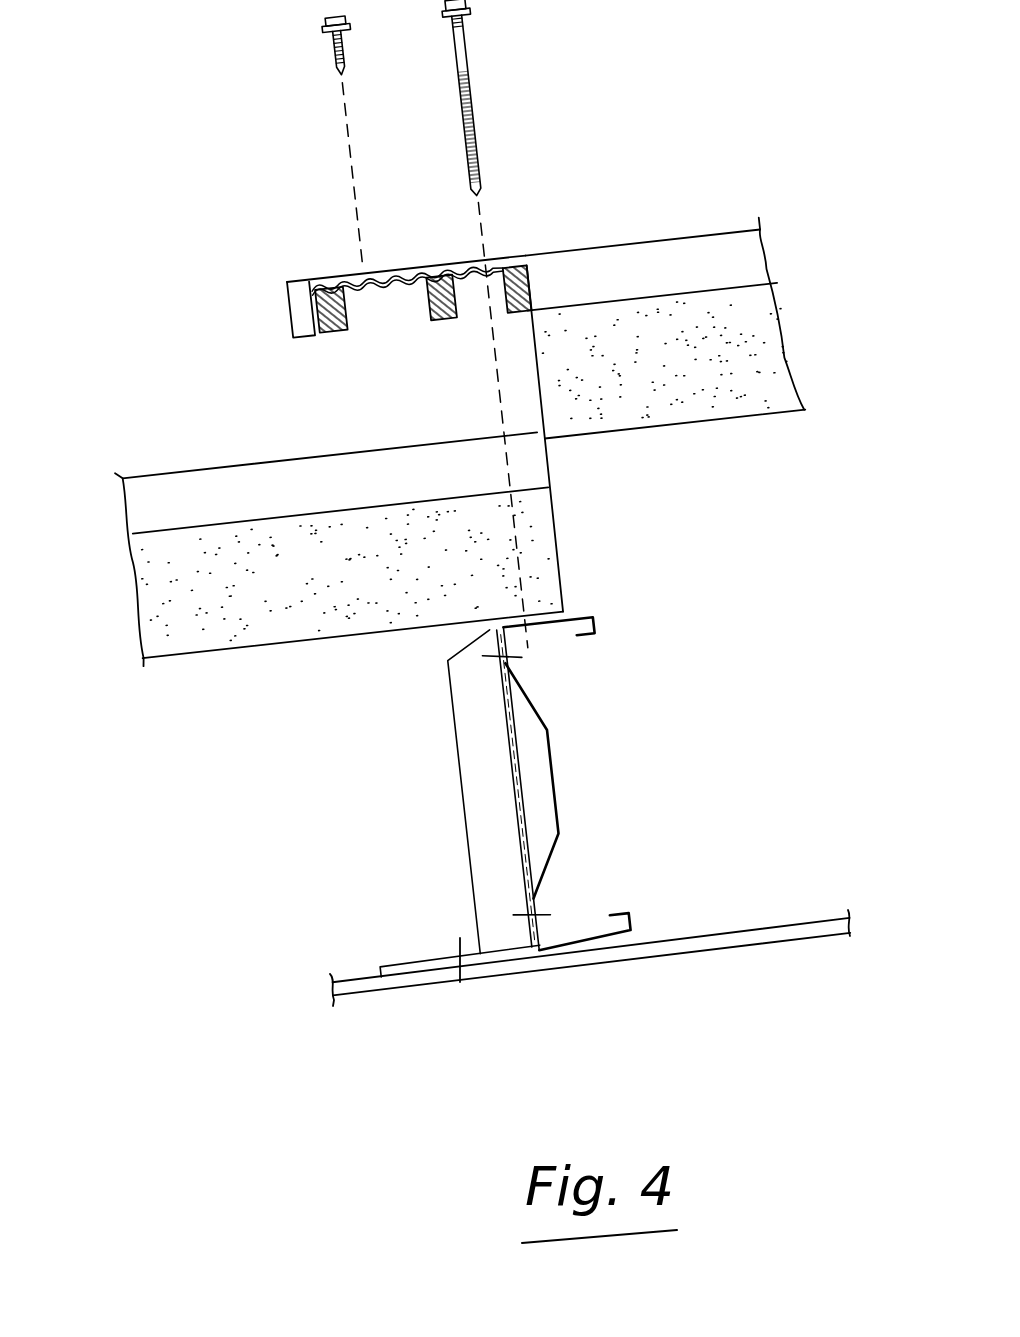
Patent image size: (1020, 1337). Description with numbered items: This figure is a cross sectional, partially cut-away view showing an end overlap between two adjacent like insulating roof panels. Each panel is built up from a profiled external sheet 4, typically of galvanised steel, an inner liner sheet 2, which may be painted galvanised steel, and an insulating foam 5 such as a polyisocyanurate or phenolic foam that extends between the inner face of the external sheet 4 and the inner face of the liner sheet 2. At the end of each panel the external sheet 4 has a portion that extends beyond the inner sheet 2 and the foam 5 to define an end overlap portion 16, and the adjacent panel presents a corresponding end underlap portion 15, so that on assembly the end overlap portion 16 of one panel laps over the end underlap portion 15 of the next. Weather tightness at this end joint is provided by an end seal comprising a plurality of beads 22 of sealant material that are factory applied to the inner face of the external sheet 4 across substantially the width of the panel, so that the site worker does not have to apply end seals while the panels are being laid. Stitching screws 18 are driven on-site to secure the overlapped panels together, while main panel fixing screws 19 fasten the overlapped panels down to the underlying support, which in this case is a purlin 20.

The inner sheet 2 is at (697, 423).
The external sheet 4 is at (623, 243).
The insulating foam 5 is at (772, 332).
The end underlap portion 15 is at (295, 442).
The end overlap portion 16 is at (300, 293).
The stitching screws 18 is at (332, 50).
The main panel fixing screws 19 is at (463, 63).
The purlin 20 is at (555, 777).
The beads of sealant material 22 is at (510, 310).